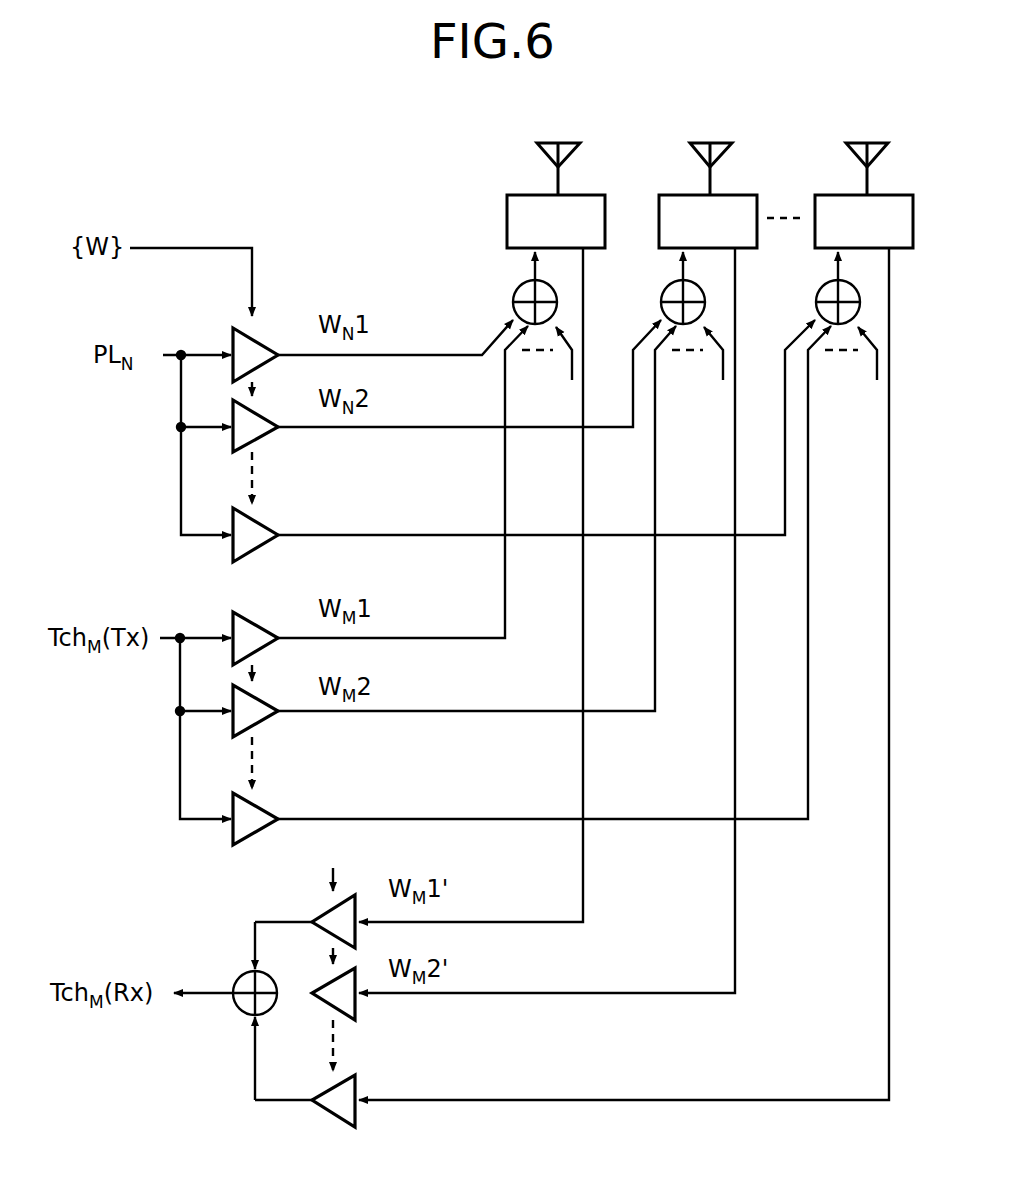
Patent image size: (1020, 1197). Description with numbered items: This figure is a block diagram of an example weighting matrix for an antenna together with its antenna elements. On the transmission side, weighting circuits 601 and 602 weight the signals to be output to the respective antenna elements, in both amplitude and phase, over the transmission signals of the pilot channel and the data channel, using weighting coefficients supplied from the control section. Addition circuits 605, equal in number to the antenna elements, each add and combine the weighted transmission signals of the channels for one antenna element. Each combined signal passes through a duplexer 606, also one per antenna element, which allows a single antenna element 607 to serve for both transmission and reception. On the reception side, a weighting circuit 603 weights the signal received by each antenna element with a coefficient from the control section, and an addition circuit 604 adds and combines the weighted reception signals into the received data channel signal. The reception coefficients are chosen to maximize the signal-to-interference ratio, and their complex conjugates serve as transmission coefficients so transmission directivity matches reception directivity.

The weighting circuit 601 is at (265, 520).
The weighting circuit 602 is at (260, 808).
The weighting circuit 603 is at (355, 1112).
The addition circuit 604 is at (243, 975).
The addition circuit 605 is at (513, 295).
The duplexer 606 is at (507, 222).
The antenna element 607 is at (540, 155).